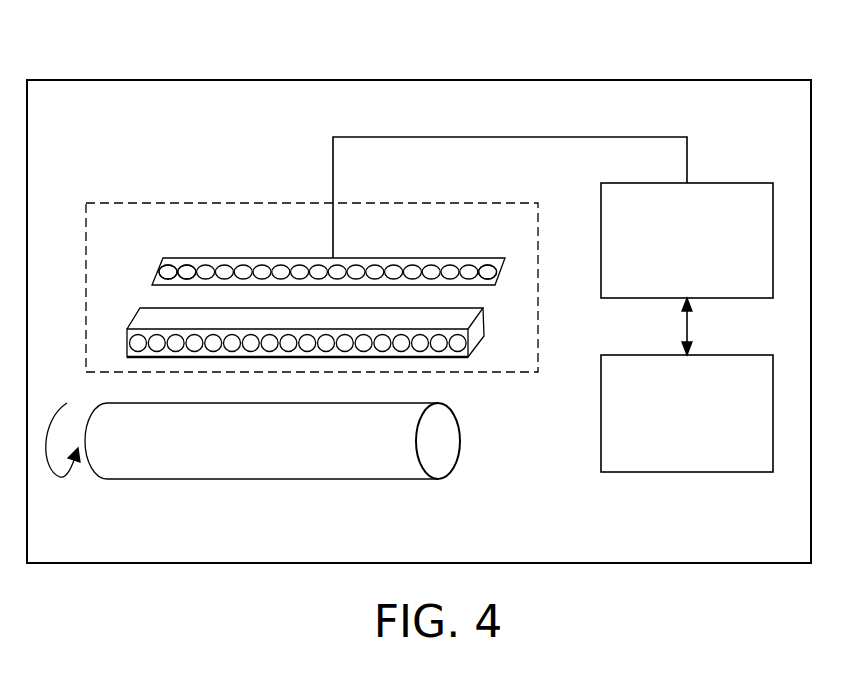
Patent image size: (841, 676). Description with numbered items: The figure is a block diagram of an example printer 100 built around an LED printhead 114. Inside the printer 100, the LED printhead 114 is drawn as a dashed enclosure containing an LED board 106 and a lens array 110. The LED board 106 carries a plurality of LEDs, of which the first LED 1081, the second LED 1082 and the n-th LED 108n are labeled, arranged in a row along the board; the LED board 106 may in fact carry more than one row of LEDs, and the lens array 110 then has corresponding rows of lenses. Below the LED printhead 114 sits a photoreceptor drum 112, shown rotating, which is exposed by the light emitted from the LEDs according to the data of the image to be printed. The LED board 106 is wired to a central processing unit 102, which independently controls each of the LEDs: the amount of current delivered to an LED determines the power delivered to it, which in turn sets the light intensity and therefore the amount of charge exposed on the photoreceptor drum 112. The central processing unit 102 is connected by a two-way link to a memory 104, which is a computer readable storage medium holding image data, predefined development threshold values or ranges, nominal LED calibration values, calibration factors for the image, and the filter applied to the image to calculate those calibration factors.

The printer 100 is at (417, 80).
The central processing unit (CPU) 102 is at (730, 183).
The memory 104 is at (687, 472).
The LED board 106 is at (158, 265).
The first LED 1081 is at (157, 270).
The second LED 1082 is at (186, 270).
The n-th LED 108n is at (486, 270).
The lens array 110 is at (477, 331).
The photoreceptor drum 112 is at (436, 441).
The LED printhead 114 is at (232, 203).